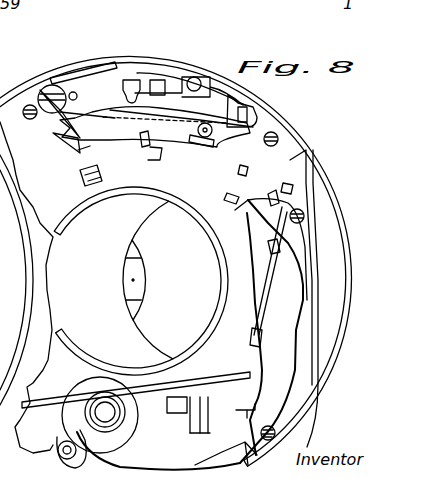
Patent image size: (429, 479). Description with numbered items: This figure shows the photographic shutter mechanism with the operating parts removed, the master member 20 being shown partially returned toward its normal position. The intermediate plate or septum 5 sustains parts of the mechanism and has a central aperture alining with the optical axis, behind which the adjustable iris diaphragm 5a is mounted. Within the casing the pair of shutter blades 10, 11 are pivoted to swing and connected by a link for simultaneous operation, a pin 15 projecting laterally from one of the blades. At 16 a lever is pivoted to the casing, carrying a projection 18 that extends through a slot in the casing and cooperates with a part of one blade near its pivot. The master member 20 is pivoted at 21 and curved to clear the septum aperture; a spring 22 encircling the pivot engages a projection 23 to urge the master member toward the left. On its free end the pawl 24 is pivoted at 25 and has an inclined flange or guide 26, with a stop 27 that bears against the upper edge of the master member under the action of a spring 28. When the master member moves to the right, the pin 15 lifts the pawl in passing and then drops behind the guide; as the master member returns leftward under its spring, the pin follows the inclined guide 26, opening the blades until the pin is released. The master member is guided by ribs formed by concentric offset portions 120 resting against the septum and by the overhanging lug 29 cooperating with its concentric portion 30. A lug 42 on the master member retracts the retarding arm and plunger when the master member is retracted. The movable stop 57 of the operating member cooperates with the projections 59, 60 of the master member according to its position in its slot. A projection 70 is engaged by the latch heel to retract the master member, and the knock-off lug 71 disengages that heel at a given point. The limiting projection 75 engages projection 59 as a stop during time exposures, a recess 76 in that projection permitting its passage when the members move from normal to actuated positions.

The septum 5 is at (74, 175).
The iris diaphragm 5a is at (135, 256).
The shutter blade 10 is at (141, 281).
The shutter blade 11 is at (186, 312).
The pin 15 is at (148, 140).
The pivot 16 is at (74, 92).
The projection 18 is at (196, 77).
The master member 20 is at (235, 403).
The pivot 21 is at (105, 414).
The spring 22 is at (275, 273).
The projection 23 is at (280, 243).
The pawl 24 is at (200, 142).
The pivot 25 is at (213, 131).
The guide 26 is at (168, 150).
The stop 27 is at (153, 120).
The spring 28 is at (235, 98).
The overhanging lug 29 is at (160, 80).
The concentric portion 30 is at (128, 80).
The lug 42 is at (183, 413).
The movable stop 57 is at (249, 168).
The projection 59 is at (280, 198).
The projection 60 is at (2, 208).
The projection 70 is at (243, 420).
The knock-off lug 71 is at (258, 338).
The limiting projection 75 is at (226, 199).
The recess 76 is at (255, 221).
The concentric offset portions 120 is at (82, 152).